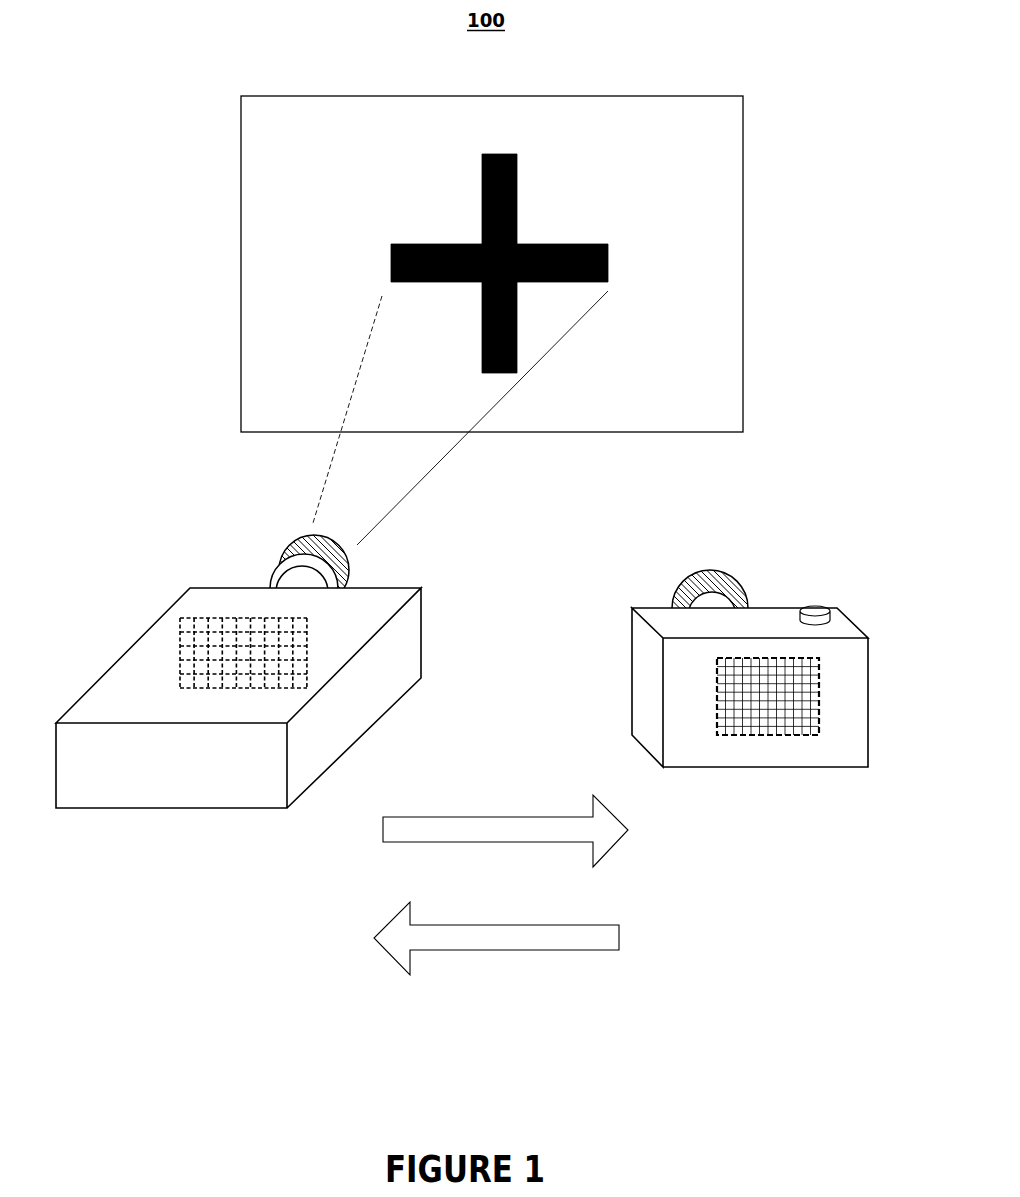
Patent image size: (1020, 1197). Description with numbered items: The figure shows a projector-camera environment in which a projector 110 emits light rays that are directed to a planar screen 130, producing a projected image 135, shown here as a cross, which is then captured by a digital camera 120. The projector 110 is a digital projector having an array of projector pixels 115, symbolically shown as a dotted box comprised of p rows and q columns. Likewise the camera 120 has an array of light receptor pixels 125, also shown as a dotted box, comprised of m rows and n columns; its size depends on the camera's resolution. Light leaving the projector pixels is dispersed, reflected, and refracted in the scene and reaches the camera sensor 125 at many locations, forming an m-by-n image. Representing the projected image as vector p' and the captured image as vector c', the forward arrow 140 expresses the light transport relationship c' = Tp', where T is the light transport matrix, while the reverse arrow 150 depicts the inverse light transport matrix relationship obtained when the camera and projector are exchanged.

The projector 110 is at (141, 790).
The array of projector pixels 115 is at (180, 626).
The digital camera 120 is at (830, 745).
The array of light receptor pixels 125 is at (822, 668).
The planar screen 130 is at (241, 241).
The projected image 135 is at (521, 181).
The light transport relationship 140 is at (383, 830).
The inverse light transport relationship 150 is at (619, 946).